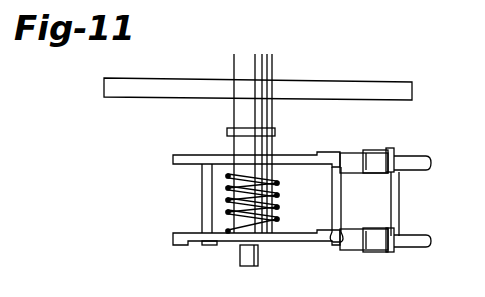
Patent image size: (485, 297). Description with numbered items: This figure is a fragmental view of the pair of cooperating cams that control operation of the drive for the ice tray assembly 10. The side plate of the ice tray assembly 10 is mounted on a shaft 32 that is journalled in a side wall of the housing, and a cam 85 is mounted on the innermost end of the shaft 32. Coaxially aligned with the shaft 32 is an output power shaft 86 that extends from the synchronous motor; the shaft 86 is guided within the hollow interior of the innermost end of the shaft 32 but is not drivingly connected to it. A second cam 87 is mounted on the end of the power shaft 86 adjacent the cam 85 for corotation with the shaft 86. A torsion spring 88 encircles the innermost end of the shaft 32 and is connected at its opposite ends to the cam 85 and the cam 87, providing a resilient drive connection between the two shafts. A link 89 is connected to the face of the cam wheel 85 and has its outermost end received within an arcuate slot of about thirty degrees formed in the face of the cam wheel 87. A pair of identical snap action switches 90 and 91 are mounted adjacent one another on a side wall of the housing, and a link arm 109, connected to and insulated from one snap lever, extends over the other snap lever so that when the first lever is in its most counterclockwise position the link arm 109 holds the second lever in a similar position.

The ice tray assembly 10 is at (391, 69).
The shaft 32 is at (265, 117).
The cam 85 is at (196, 163).
The output power shaft 86 is at (240, 260).
The cam 87 is at (184, 242).
The torsion spring 88 is at (278, 195).
The link 89 is at (202, 208).
The snap action switch 90 is at (400, 139).
The snap action switch 91 is at (373, 257).
The link arm 109 is at (340, 198).